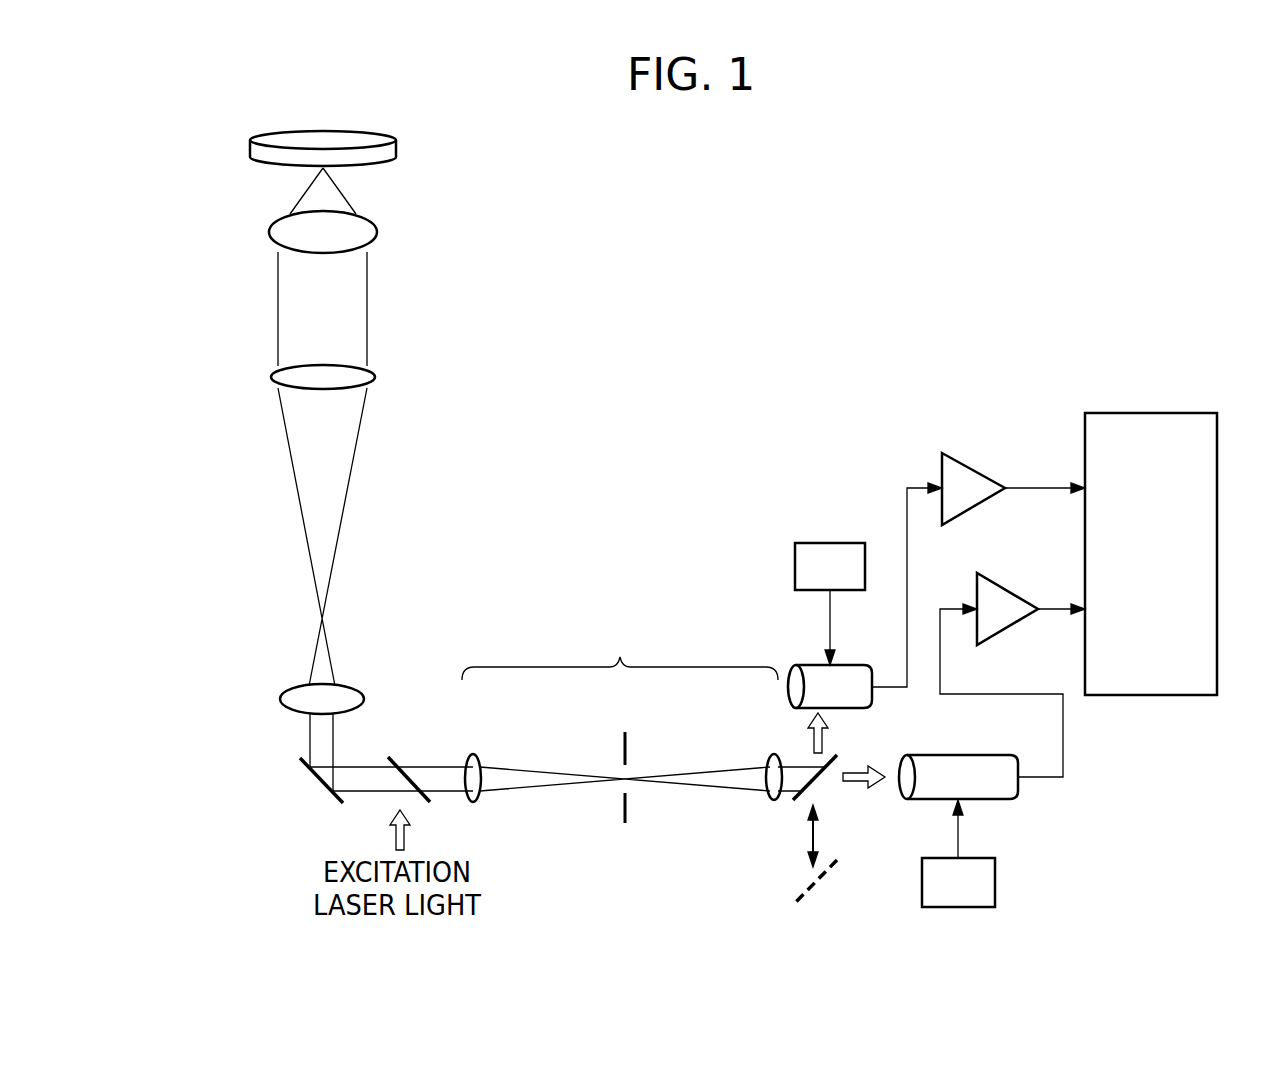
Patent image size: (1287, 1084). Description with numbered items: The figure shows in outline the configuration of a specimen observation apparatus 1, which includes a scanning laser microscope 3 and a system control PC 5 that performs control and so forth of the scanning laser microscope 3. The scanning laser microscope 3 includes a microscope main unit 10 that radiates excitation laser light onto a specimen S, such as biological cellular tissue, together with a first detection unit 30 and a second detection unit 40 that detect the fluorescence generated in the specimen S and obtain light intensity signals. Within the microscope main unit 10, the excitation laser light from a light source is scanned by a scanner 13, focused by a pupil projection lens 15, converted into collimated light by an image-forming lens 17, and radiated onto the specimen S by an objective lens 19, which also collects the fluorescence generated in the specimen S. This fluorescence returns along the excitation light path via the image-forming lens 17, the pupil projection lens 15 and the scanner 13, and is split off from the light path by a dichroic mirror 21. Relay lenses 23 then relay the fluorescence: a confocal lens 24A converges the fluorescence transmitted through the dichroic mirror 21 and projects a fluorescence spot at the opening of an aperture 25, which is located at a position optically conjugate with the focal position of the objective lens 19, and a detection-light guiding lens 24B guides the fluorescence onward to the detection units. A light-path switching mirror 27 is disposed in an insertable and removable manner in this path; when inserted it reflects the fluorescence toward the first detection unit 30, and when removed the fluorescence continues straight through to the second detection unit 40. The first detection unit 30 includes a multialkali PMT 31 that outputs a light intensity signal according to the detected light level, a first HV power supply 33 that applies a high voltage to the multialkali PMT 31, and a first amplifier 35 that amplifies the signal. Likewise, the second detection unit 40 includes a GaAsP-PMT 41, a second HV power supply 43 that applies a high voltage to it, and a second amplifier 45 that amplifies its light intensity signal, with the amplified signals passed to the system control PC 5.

The specimen observation apparatus 1 is at (1181, 178).
The scanning laser microscope 3 is at (878, 268).
The system control PC 5 is at (1150, 413).
The microscope main unit 10 is at (260, 862).
The scanner 13 is at (314, 779).
The pupil projection lens 15 is at (280, 699).
The image-forming lens 17 is at (272, 377).
The objective lens 19 is at (268, 232).
The dichroic mirror 21 is at (390, 757).
The relay lenses 23 is at (620, 653).
The confocal lens 24A is at (478, 754).
The detection-light guiding lens 24B is at (775, 754).
The aperture 25 is at (625, 826).
The light-path switching mirror 27 is at (817, 780).
The first detection unit 30 is at (836, 417).
The multialkali PMT 31 is at (812, 665).
The first HV power supply 33 is at (828, 543).
The first amplifier 35 is at (972, 470).
The second detection unit 40 is at (1123, 809).
The GaAsP-PMT 41 is at (922, 755).
The second HV power supply 43 is at (995, 882).
The second amplifier 45 is at (1010, 590).
The specimen S is at (250, 148).